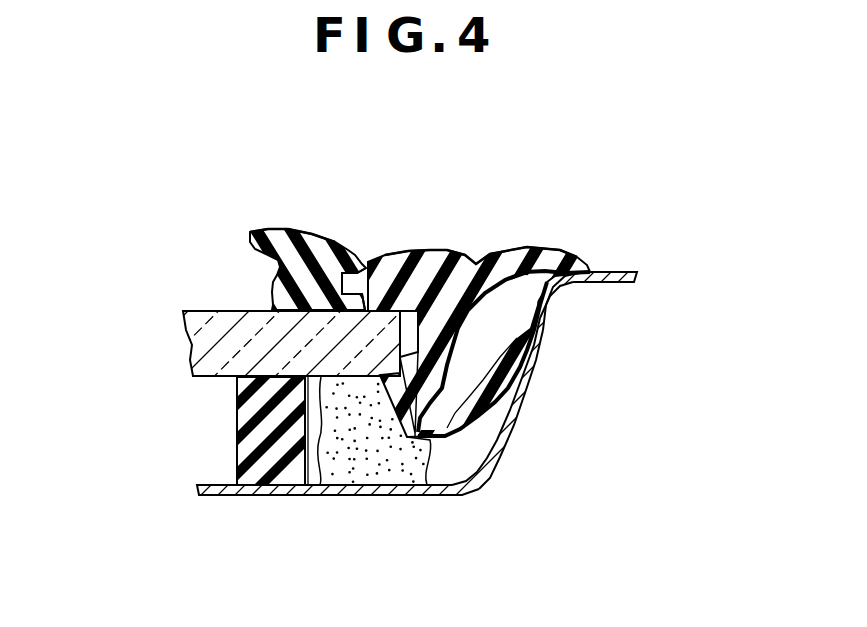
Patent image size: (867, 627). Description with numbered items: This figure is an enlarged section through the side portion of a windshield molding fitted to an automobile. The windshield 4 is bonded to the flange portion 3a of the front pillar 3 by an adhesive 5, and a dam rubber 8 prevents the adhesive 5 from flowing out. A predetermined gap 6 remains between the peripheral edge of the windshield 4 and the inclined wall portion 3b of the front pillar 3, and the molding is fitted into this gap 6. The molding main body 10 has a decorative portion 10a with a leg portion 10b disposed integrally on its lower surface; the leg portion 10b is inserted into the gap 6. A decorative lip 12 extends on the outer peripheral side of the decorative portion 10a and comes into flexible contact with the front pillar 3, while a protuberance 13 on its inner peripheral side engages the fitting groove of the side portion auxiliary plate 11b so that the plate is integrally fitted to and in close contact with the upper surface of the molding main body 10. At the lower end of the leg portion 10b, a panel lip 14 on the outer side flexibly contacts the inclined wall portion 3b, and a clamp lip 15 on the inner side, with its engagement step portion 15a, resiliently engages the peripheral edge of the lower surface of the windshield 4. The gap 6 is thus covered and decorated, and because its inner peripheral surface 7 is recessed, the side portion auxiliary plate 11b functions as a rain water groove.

The front pillar 3 is at (607, 271).
The flange portion 3a is at (223, 496).
The inclined wall portion 3b is at (544, 313).
The windshield 4 is at (223, 377).
The adhesive 5 is at (393, 473).
The gap 6 is at (478, 383).
The inner peripheral surface 7 is at (270, 280).
The dam rubber 8 is at (272, 463).
The molding main body 10 is at (480, 232).
The decorative portion 10a is at (428, 251).
The leg portion 10b is at (447, 343).
The side portion auxiliary plate 11b is at (306, 233).
The decorative lip 12 is at (560, 266).
The protuberance 13 is at (356, 272).
The panel lip 14 is at (541, 368).
The clamp lip 15 is at (402, 410).
The engagement step portion 15a is at (393, 371).